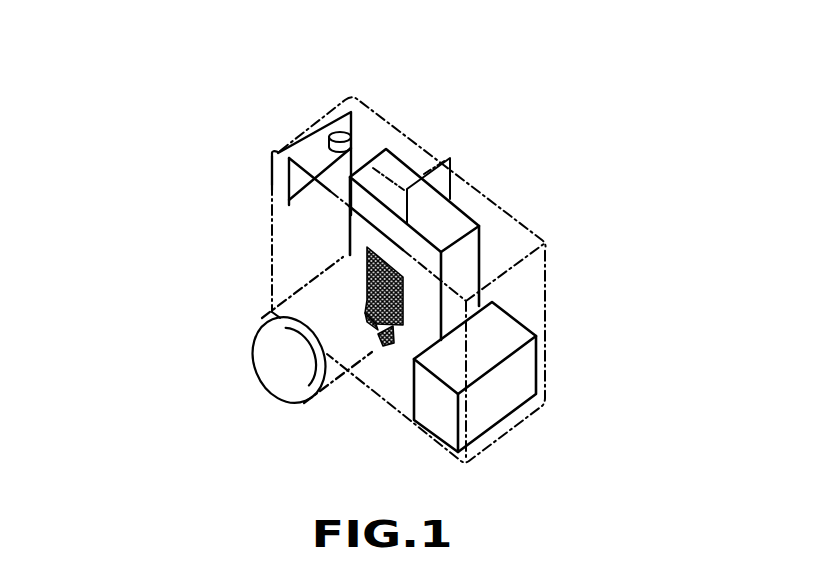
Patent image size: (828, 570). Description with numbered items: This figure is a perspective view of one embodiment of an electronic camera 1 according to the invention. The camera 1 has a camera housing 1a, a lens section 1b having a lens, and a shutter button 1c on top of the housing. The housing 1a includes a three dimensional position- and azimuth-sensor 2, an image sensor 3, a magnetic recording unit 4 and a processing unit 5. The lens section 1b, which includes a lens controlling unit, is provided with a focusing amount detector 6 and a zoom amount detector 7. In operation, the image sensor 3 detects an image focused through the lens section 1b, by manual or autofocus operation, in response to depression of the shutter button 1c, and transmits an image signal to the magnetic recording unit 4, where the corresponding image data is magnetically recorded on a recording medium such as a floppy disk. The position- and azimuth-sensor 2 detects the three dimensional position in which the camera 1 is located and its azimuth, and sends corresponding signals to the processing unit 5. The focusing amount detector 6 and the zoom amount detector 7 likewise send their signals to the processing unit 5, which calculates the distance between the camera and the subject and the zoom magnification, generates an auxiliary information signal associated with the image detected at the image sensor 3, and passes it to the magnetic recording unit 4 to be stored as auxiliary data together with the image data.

The electronic camera 1 is at (234, 105).
The camera housing 1a is at (271, 182).
The lens section 1b is at (260, 334).
The shutter button 1c is at (338, 132).
The three dimensional position- and azimuth-sensor 2 is at (524, 333).
The image sensor 3 is at (364, 266).
The magnetic recording unit 4 is at (449, 197).
The processing unit 5 is at (337, 132).
The focusing amount detector 6 is at (365, 318).
The zoom amount detector 7 is at (386, 346).